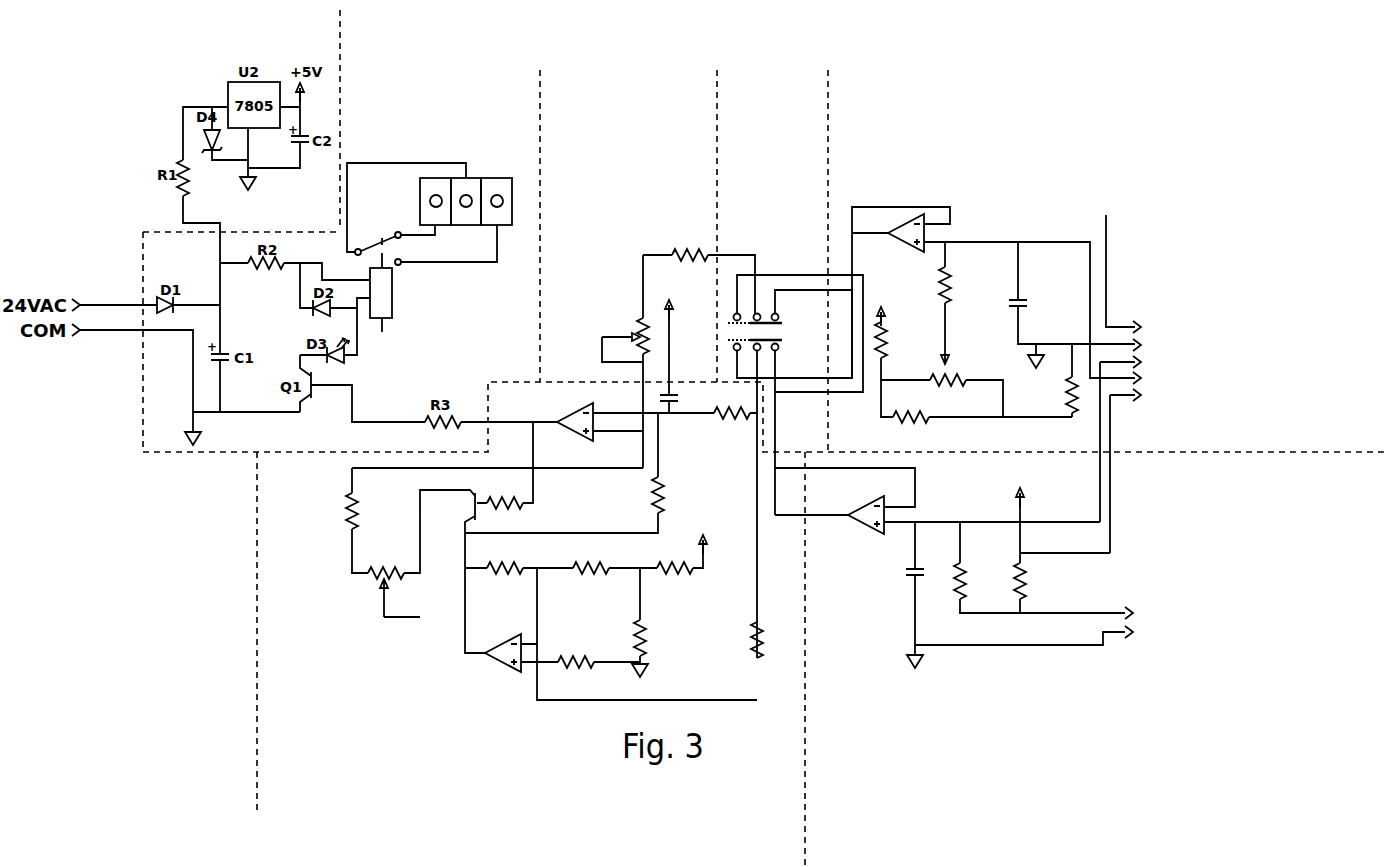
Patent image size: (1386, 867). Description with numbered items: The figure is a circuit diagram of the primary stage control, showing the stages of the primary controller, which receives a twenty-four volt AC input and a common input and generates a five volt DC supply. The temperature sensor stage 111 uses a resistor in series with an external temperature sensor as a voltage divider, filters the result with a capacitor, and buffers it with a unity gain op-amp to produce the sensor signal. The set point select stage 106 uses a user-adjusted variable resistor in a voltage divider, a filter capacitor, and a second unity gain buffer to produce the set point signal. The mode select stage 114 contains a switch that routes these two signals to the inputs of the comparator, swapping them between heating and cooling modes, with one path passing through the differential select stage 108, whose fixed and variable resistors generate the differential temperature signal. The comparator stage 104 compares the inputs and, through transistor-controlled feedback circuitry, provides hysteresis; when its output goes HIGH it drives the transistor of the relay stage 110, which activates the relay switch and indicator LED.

The comparator stage 104 is at (535, 566).
The set point select stage 106 is at (1066, 319).
The differential select stage 108 is at (659, 277).
The relay stage 110 is at (439, 214).
The temperature sensor stage 111 is at (989, 601).
The mode select stage 114 is at (794, 354).